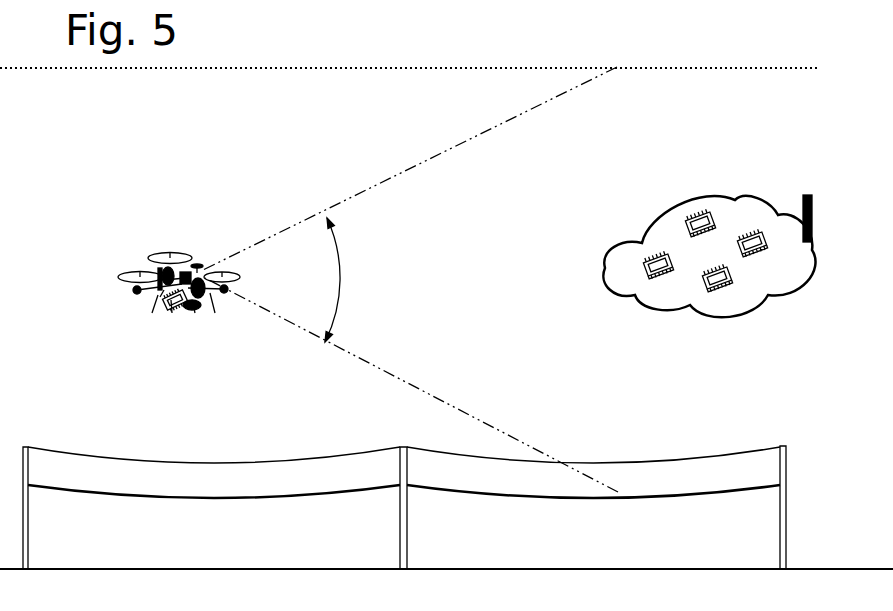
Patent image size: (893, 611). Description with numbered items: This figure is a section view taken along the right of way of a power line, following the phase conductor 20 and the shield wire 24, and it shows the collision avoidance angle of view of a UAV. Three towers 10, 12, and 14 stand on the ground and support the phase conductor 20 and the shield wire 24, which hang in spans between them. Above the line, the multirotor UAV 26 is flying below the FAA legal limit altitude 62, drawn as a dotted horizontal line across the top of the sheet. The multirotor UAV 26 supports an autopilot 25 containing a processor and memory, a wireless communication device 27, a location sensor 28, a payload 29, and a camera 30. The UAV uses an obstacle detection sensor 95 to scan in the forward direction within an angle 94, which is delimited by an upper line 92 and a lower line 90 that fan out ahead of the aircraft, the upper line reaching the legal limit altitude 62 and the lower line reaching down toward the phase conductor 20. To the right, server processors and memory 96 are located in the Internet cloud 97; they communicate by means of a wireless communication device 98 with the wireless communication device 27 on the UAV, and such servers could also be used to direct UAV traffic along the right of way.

The tower 10 is at (28, 538).
The tower 12 is at (407, 540).
The tower 14 is at (786, 540).
The phase conductor 20 is at (280, 498).
The shield wire 24 is at (292, 459).
The autopilot 25 is at (172, 312).
The multirotor UAV 26 is at (160, 298).
The wireless communication device 27 is at (157, 277).
The location sensor 28 is at (197, 263).
The payload 29 is at (193, 309).
The camera 30 is at (207, 295).
The FAA legal limit altitude 62 is at (383, 68).
The line 90 is at (372, 347).
The line 92 is at (374, 198).
The angle 94 is at (347, 280).
The obstacle detection sensor 95 is at (198, 273).
The server processors and memory 96 is at (728, 283).
The Internet cloud 97 is at (640, 233).
The wireless communication device 98 is at (806, 195).